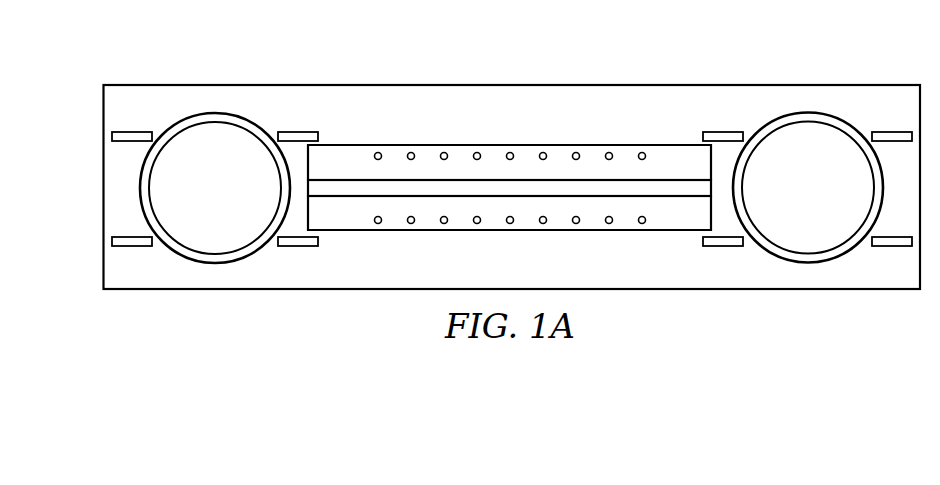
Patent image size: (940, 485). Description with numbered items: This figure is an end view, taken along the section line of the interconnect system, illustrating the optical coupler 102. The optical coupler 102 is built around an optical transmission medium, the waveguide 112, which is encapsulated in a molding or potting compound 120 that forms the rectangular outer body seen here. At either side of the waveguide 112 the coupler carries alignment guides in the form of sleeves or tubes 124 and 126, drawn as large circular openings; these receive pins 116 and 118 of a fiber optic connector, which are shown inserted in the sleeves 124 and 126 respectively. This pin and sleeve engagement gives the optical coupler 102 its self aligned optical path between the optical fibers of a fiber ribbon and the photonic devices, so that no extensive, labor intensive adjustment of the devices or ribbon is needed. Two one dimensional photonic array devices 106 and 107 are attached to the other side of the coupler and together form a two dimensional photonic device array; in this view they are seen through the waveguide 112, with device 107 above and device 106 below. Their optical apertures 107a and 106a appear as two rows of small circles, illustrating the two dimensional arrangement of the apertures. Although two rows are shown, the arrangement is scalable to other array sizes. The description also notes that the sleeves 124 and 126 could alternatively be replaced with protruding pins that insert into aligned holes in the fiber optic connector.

The optical coupler 102 is at (614, 59).
The molding or potting compound 120 is at (510, 85).
The sleeve 124 is at (807, 110).
The sleeve 126 is at (213, 113).
The pin 116 is at (828, 202).
The pin 118 is at (235, 203).
The photonic array device 107 is at (352, 153).
The waveguide 112 is at (427, 187).
The photonic array device 106 is at (352, 218).
The optical apertures 107a is at (478, 153).
The optical apertures 106a is at (478, 222).